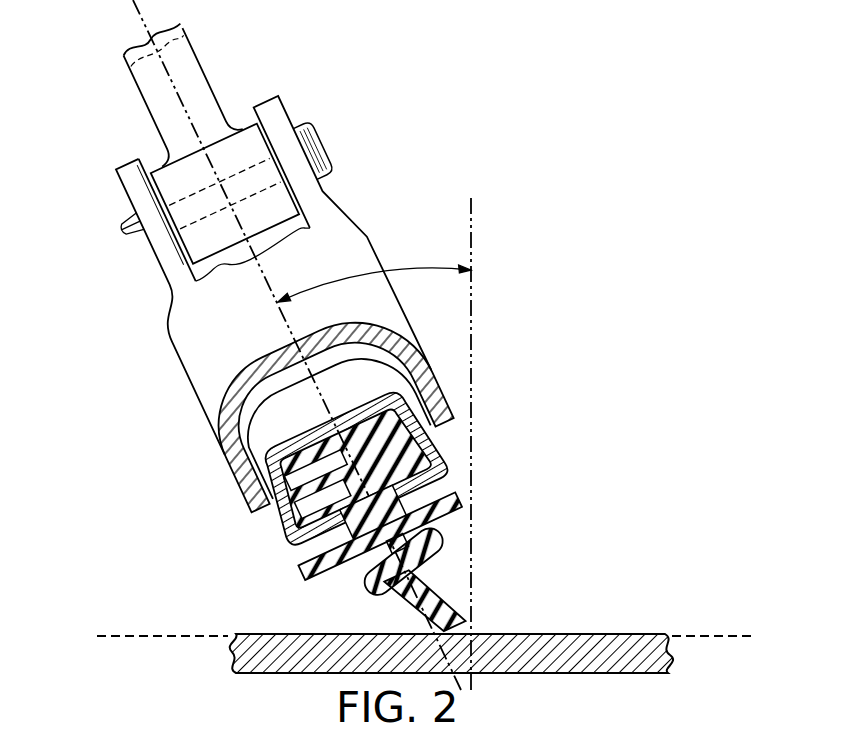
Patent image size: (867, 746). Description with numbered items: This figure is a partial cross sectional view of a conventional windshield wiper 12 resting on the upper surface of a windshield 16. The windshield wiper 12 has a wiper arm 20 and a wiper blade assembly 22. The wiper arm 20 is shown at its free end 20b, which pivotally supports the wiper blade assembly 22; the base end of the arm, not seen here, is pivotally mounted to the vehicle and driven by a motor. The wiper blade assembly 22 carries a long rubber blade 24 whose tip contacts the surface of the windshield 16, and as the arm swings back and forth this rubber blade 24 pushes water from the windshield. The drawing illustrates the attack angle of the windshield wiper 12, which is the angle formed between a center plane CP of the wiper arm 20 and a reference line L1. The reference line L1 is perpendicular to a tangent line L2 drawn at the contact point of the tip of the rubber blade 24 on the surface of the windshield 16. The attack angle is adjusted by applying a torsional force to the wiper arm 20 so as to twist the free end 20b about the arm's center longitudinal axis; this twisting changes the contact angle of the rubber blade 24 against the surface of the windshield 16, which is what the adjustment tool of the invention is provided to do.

The windshield wiper 12 is at (370, 160).
The windshield 16 is at (583, 633).
The wiper arm 20 is at (147, 112).
The free end 20b is at (235, 147).
The wiper blade assembly 22 is at (170, 351).
The rubber blade 24 is at (470, 503).
The center plane CP is at (262, 272).
The reference line L1 is at (473, 385).
The tangent line L2 is at (173, 635).